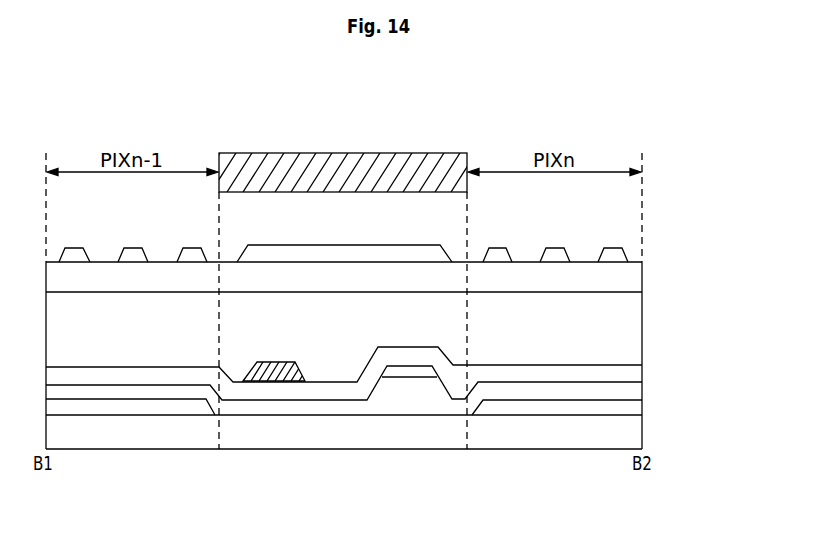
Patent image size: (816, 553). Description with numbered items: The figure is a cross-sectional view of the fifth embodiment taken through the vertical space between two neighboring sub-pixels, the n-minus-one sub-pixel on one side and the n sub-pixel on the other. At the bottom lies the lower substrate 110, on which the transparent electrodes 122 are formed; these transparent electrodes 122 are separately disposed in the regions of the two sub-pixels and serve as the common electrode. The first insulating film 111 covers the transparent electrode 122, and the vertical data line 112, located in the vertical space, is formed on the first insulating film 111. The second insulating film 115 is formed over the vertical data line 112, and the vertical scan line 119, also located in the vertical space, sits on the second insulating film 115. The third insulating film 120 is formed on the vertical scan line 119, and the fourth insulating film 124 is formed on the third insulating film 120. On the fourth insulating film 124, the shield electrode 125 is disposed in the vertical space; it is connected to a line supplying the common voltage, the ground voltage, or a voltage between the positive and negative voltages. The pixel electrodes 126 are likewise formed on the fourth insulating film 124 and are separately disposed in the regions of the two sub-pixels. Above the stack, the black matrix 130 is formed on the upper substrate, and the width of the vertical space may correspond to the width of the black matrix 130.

The lower substrate 110 is at (633, 435).
The first insulating film 111 is at (633, 408).
The vertical data line 112 is at (410, 388).
The second insulating film 115 is at (633, 372).
The vertical scan line 119 is at (275, 381).
The third insulating film 120 is at (632, 324).
The transparent electrode 122 is at (633, 390).
The fourth insulating film 124 is at (632, 273).
The shield electrode 125 is at (333, 253).
The pixel electrode 126 is at (618, 255).
The black matrix 130 is at (338, 162).